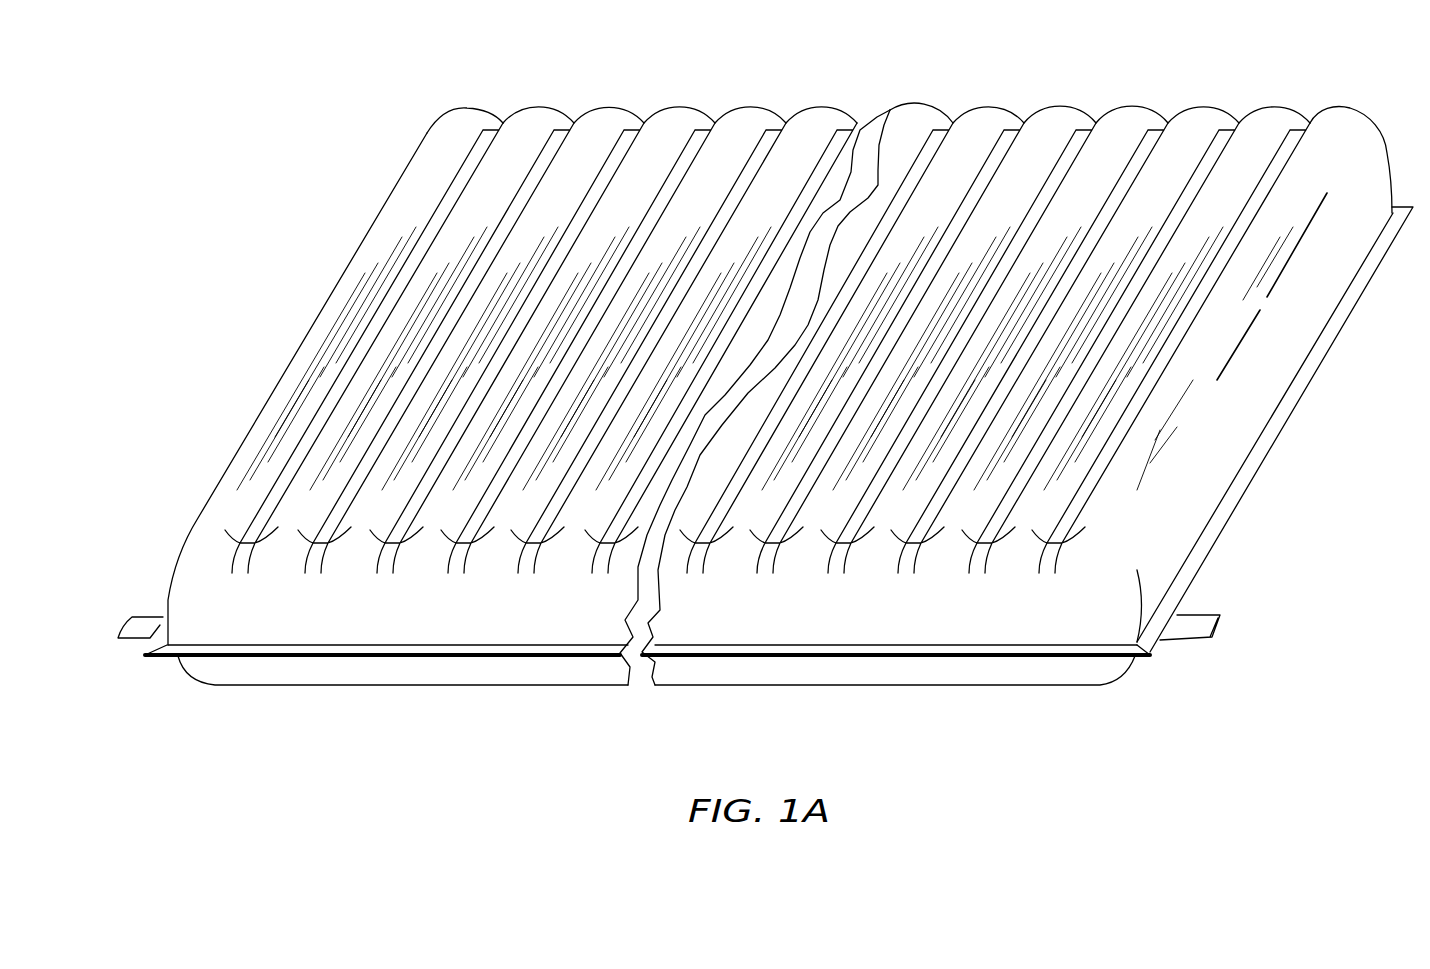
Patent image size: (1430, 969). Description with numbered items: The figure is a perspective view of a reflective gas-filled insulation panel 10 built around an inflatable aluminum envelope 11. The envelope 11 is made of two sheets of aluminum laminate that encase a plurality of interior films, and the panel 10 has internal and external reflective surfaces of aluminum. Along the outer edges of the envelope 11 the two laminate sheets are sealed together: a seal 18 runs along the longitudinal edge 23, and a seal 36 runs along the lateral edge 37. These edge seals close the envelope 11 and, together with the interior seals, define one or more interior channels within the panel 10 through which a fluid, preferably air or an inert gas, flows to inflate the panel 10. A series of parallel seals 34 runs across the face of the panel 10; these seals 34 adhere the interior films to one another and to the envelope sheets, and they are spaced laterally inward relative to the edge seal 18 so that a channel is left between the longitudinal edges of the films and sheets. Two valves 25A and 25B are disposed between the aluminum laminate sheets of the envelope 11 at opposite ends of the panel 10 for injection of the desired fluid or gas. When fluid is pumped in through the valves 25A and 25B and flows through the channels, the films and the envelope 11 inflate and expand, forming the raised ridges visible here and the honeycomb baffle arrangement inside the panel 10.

The reflective gas-filled insulation panel 10 is at (1086, 60).
The inflatable aluminum envelope 11 is at (1387, 153).
The seal 18 is at (889, 647).
The longitudinal edge 23 is at (756, 657).
The valve 25A is at (1218, 617).
The valve 25B is at (143, 615).
The seal 34 is at (690, 157).
The seal 36 is at (1233, 490).
The lateral edge 37 is at (1293, 410).